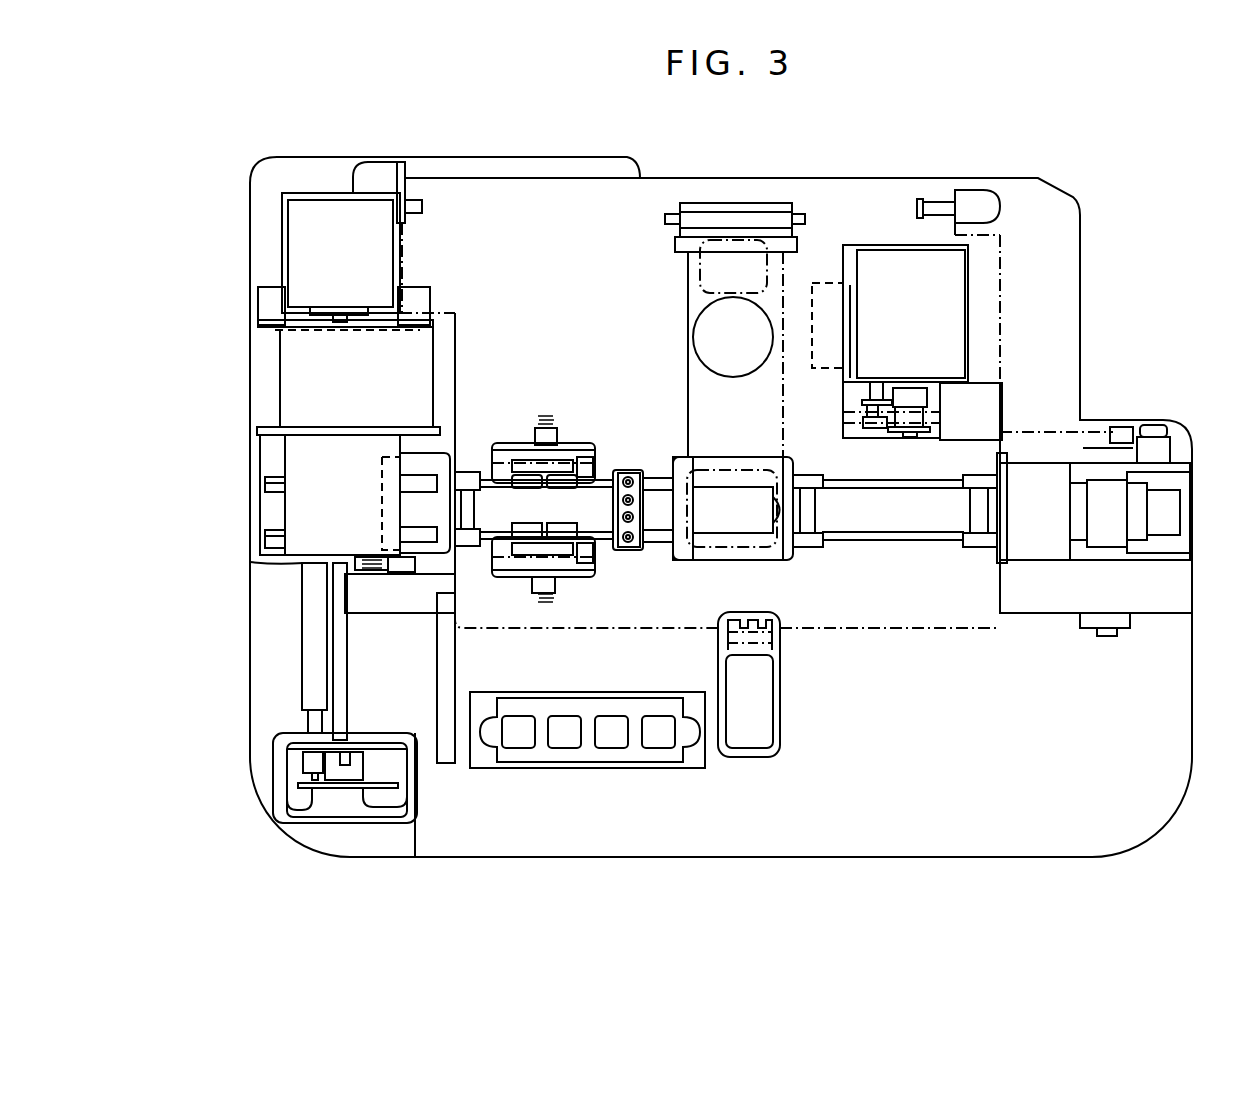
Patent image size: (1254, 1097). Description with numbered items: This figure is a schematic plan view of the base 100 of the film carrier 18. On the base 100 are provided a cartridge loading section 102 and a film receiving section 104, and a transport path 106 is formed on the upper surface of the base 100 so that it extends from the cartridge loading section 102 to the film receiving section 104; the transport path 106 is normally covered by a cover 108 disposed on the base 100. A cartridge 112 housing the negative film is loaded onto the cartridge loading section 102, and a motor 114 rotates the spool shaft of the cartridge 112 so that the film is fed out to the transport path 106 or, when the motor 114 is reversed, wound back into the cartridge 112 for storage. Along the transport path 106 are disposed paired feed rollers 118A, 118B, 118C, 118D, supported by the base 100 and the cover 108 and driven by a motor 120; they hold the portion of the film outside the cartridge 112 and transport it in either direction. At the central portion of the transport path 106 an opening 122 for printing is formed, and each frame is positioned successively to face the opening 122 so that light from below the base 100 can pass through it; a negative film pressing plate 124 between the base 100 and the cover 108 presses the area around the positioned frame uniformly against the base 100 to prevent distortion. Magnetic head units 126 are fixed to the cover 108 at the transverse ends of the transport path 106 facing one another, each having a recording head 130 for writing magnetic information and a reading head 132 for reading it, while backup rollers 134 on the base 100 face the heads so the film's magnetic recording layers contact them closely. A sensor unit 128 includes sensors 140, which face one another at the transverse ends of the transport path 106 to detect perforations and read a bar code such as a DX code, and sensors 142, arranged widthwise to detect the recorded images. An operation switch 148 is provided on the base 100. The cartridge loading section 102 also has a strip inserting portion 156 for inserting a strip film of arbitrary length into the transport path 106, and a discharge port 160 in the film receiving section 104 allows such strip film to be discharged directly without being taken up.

The film carrier 18 is at (721, 519).
The base 100 is at (841, 852).
The cartridge loading section 102 is at (342, 492).
The film receiving section 104 is at (1022, 495).
The transport path 106 is at (872, 517).
The cover 108 is at (773, 501).
The cartridge 112 is at (380, 480).
The motor 114 is at (297, 268).
The feed roller 118A is at (463, 547).
The feed roller 118B is at (673, 540).
The feed roller 118C is at (806, 481).
The feed roller 118D is at (972, 480).
The motor 120 is at (952, 315).
The opening 122 is at (715, 518).
The negative film pressing plate 124 is at (715, 462).
The magnetic head unit 126 is at (562, 490).
The sensor unit 128 is at (628, 460).
The recording head 130 is at (513, 458).
The reading head 132 is at (550, 525).
The backup roller 134 is at (500, 478).
The sensor 140 is at (643, 507).
The sensor 142 is at (624, 505).
The operation switch 148 is at (586, 773).
The strip inserting portion 156 is at (275, 517).
The discharge port 160 is at (1190, 513).